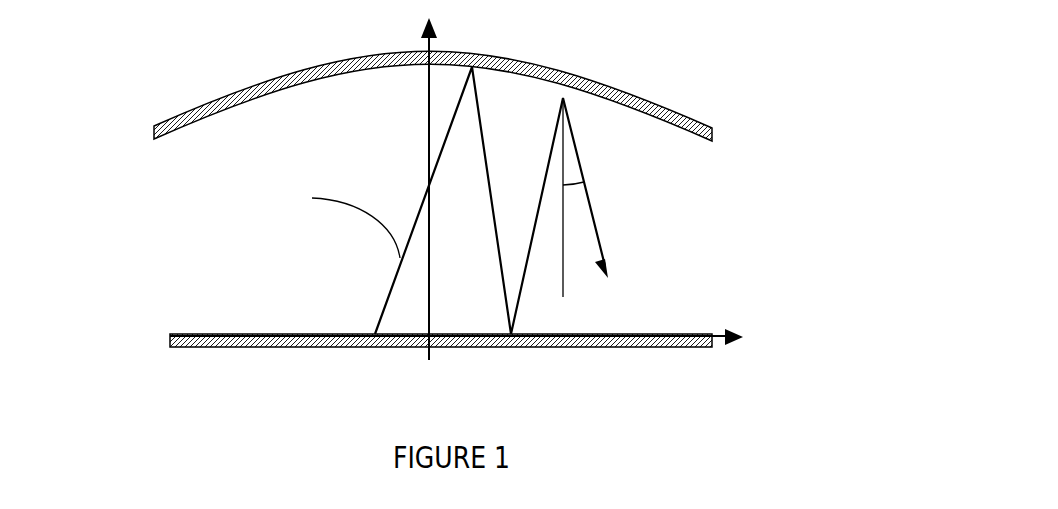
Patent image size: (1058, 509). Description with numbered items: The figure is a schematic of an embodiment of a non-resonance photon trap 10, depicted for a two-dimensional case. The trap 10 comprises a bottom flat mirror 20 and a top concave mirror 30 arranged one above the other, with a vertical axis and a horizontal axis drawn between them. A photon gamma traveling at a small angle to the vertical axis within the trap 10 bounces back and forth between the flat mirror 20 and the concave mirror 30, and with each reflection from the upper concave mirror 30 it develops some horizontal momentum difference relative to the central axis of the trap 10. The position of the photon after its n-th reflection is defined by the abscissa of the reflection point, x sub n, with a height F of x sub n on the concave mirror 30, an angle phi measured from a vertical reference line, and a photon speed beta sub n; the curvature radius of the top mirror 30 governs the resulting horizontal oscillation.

The non-resonance photon trap 10 is at (48, 118).
The bottom flat mirror 20 is at (230, 334).
The top concave mirror 30 is at (230, 100).